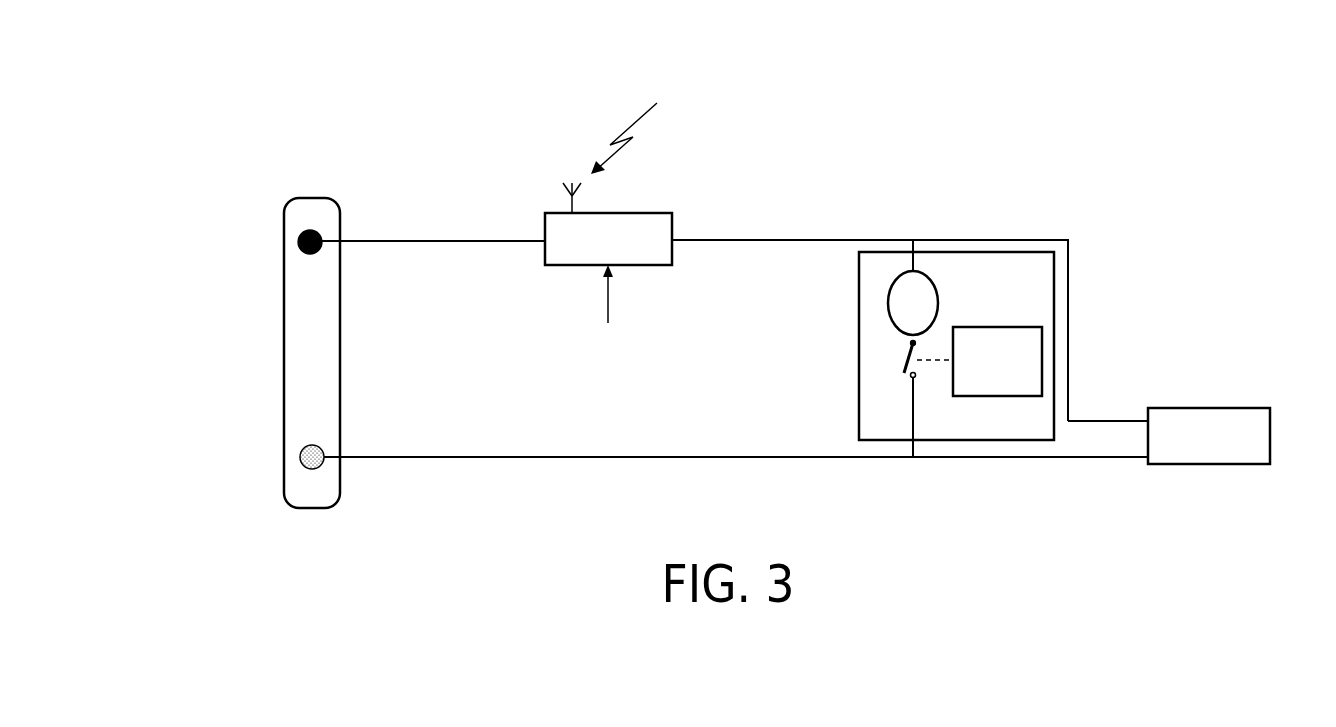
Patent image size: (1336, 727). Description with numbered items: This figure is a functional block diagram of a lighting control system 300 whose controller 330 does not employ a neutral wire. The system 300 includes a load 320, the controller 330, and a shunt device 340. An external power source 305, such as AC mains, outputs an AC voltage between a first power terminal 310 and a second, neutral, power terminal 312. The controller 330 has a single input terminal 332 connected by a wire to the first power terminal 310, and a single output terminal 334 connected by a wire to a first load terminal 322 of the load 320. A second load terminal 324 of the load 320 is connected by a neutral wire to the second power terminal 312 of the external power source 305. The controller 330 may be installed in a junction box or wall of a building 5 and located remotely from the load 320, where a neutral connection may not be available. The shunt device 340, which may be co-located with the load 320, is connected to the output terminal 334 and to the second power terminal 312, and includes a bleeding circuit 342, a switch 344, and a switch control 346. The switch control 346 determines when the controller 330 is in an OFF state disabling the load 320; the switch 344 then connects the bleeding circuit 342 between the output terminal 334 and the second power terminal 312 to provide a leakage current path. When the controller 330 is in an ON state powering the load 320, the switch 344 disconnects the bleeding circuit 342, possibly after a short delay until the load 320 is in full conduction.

The lighting control system 300 is at (1216, 104).
The external power source 305 is at (288, 387).
The first power terminal 310 is at (401, 227).
The second power terminal 312 is at (618, 443).
The load 320 is at (1231, 408).
The first load terminal 322 is at (1108, 406).
The second load terminal 324 is at (1030, 472).
The controller 330 is at (556, 258).
The single input terminal 332 is at (512, 227).
The single output terminal 334 is at (870, 317).
The shunt device 340 is at (859, 270).
The bleeding circuit 342 is at (934, 282).
The switch 344 is at (904, 360).
The switch control 346 is at (1020, 327).
The building 5 is at (692, 111).